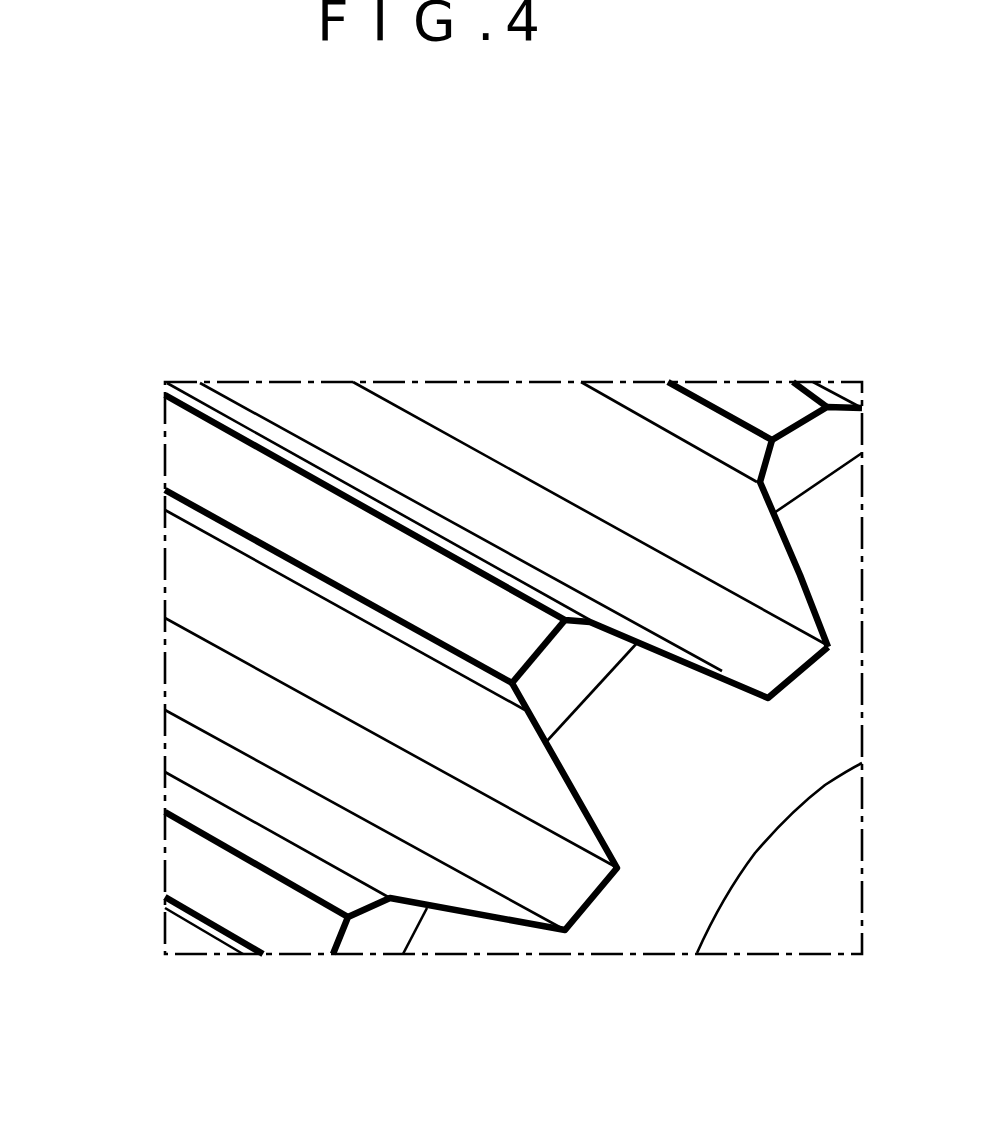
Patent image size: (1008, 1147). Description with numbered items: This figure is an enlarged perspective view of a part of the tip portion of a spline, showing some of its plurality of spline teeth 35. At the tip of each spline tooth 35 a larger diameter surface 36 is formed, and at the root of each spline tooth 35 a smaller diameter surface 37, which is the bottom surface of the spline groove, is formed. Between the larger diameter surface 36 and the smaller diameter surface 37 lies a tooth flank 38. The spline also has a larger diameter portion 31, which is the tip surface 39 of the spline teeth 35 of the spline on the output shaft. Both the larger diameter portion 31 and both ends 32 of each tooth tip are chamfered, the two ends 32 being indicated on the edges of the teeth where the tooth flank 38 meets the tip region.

The larger diameter portion 31 is at (698, 778).
The ends of tooth tip 32 is at (371, 503).
The spline tooth 35 is at (500, 750).
The larger diameter surface 36 is at (190, 460).
The smaller diameter surface 37 is at (305, 403).
The tooth flank 38 is at (258, 420).
The tip surface 39 is at (602, 777).